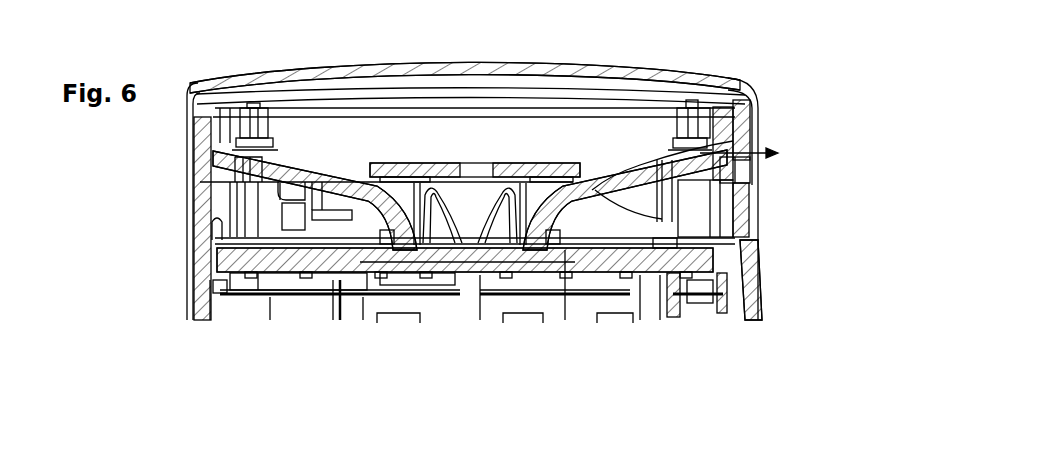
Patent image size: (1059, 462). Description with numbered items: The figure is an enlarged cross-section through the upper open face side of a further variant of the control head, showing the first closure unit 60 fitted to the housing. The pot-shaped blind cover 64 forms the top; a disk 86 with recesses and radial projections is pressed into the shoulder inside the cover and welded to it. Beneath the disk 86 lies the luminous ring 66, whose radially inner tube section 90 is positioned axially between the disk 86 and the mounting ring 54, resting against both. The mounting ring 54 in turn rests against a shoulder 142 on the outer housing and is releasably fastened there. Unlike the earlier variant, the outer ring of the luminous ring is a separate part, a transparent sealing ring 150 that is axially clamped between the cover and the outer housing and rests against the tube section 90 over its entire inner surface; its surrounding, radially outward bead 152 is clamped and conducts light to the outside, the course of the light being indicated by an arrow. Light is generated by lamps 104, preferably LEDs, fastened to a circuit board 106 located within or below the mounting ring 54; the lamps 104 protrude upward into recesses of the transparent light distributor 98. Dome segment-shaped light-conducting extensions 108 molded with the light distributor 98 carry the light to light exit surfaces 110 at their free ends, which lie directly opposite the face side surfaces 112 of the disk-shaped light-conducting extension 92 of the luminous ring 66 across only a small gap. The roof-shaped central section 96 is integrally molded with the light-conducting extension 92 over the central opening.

The mounting ring 54 is at (743, 213).
The first closure unit 60 is at (752, 63).
The blind cover 64 is at (587, 70).
The luminous ring 66 is at (305, 158).
The disk 86 is at (738, 108).
The tube section 90 is at (728, 133).
The light-conducting extension 92 is at (331, 183).
The roof-shaped central section 96 is at (507, 168).
The light distributor 98 is at (541, 190).
The lamp 104 is at (557, 254).
The circuit board 106 is at (495, 258).
The light-conducting extensions 108 is at (392, 243).
The light exit surfaces 110 is at (382, 215).
The face side surfaces 112 is at (565, 320).
The shoulder 142 is at (745, 242).
The sealing ring 150 is at (743, 163).
The bead 152 is at (748, 146).